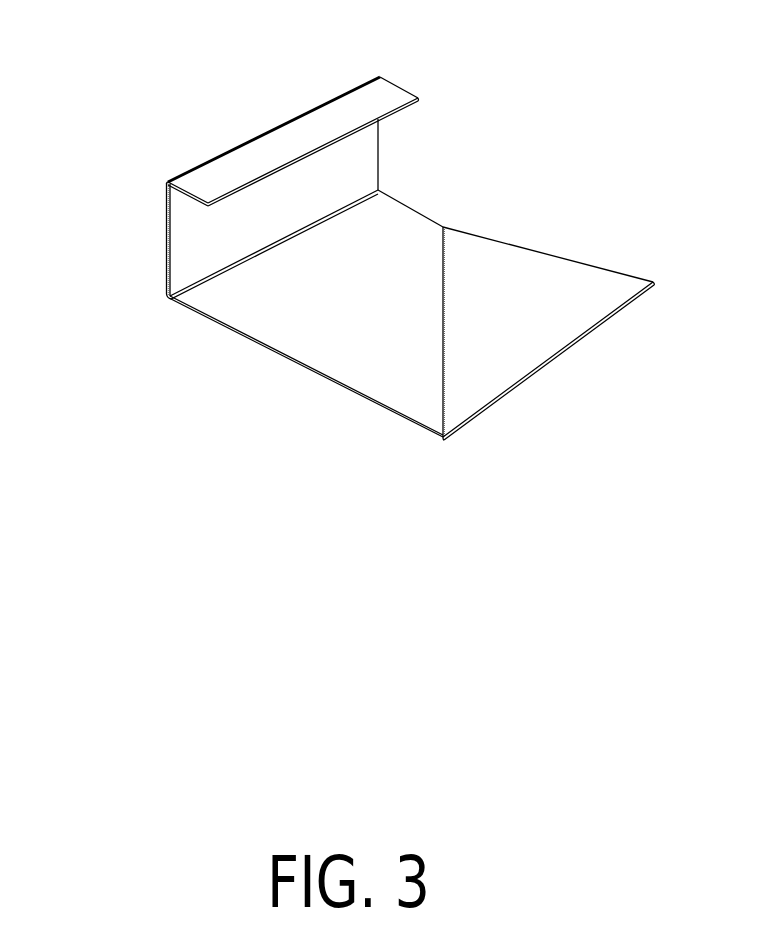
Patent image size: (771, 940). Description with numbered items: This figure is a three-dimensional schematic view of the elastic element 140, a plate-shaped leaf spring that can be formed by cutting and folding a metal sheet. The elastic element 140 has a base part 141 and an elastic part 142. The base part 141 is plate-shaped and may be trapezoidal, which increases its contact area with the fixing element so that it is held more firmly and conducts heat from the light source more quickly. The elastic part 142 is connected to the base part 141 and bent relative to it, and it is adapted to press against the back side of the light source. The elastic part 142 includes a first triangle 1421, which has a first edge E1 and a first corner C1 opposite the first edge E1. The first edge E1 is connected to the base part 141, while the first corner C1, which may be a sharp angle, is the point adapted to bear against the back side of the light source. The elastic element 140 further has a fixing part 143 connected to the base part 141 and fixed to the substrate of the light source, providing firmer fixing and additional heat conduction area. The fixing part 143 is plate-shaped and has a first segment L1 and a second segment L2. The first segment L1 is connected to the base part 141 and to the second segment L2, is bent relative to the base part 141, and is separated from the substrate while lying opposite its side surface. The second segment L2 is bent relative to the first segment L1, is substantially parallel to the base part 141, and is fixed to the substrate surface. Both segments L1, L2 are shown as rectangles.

The elastic element 140 is at (122, 42).
The base part 141 is at (322, 338).
The elastic part 142 is at (522, 335).
The first triangle 1421 is at (543, 275).
The fixing part 143 is at (95, 142).
The first segment L1 is at (163, 213).
The second segment L2 is at (193, 177).
The first edge E1 is at (448, 278).
The first corner C1 is at (653, 280).